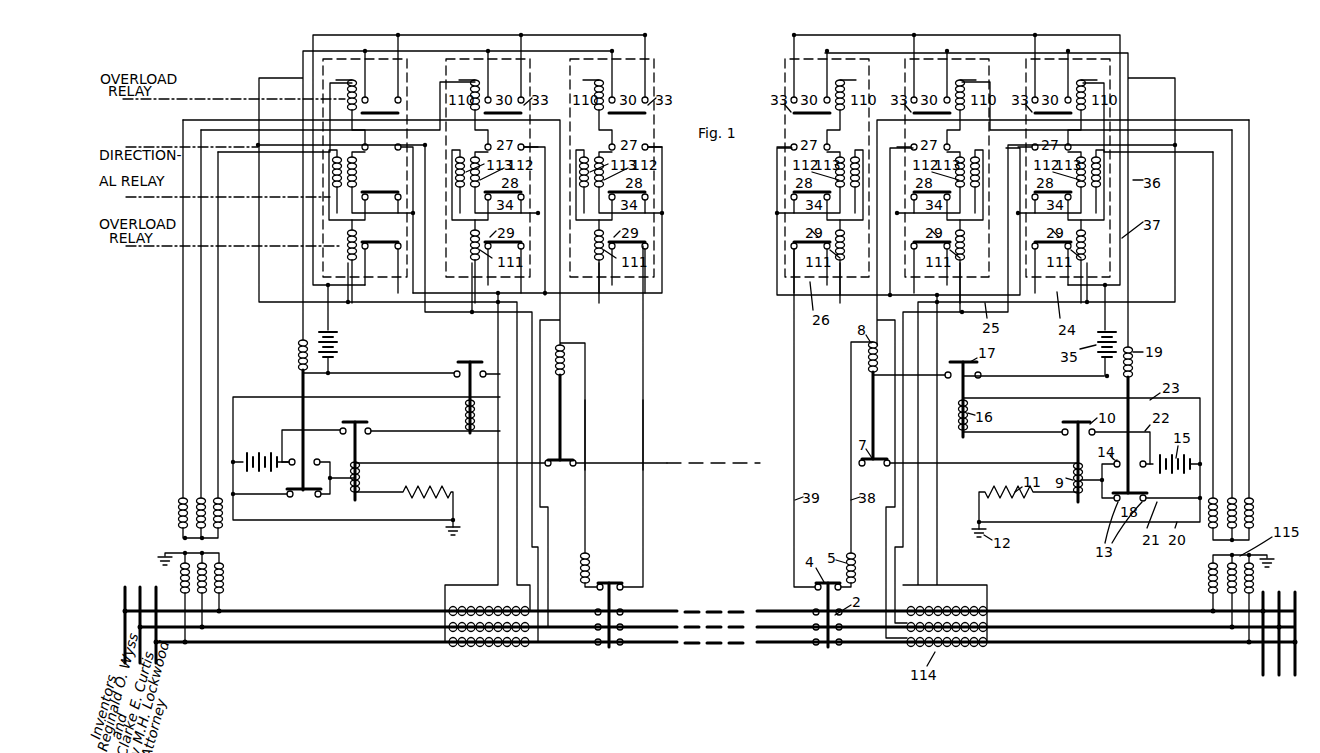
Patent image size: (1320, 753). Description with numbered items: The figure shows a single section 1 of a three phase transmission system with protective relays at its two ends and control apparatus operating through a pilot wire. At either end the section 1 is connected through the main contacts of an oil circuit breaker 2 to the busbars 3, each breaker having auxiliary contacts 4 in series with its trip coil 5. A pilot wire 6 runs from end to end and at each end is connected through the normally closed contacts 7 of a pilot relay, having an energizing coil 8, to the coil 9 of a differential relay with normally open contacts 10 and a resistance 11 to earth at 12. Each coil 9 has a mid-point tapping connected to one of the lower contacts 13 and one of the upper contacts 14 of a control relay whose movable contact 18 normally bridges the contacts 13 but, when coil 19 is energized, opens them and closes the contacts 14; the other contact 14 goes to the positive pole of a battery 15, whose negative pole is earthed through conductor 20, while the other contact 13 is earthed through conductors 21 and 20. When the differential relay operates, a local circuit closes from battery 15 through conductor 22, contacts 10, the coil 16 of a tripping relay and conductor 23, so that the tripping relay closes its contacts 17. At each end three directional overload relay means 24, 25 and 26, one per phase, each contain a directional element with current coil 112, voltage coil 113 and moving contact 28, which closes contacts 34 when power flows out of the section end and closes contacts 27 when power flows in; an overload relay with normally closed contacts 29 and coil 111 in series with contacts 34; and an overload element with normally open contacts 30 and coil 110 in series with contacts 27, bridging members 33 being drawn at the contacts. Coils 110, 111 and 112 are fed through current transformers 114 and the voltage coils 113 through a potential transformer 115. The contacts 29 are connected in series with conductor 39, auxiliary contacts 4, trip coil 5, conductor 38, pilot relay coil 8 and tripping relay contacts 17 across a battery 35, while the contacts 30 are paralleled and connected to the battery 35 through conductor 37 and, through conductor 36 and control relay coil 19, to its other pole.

The section of the phase conductors 1 is at (719, 643).
The oil circuit breaker 2 is at (623, 612).
The busbars 3 is at (127, 650).
The auxiliary contacts 4 is at (613, 582).
The trip coil 5 is at (591, 563).
The pilot wire 6 is at (716, 452).
The pilot relay contacts 7 is at (559, 466).
The pilot relay energizing coil 8 is at (559, 346).
The differential relay coil 9 is at (363, 474).
The differential relay contacts 10 is at (368, 424).
The resistance 11 is at (433, 490).
The earth 12 is at (458, 536).
The lower contacts 13 is at (318, 498).
The upper contacts 14 is at (318, 459).
The battery 15 is at (257, 455).
The tripping relay coil 16 is at (473, 428).
The tripping relay contacts 17 is at (466, 362).
The movable contact 18 is at (281, 443).
The control relay coil 19 is at (298, 358).
The conductor 20 is at (273, 520).
The conductor 21 is at (257, 497).
The conductor 22 is at (283, 430).
The conductor 23 is at (240, 398).
The directional overload relay means 24 is at (380, 292).
The directional overload relay means 25 is at (459, 303).
The directional overload relay means 26 is at (597, 292).
The directional element contacts 27 is at (387, 215).
The moving contact 28 is at (381, 187).
The overload relay contacts 29 is at (381, 259).
The overload element contacts 30 is at (381, 70).
The contact bridging member 33 is at (394, 102).
The directional element contacts 34 is at (394, 206).
The battery 35 is at (337, 344).
The conductor 36 is at (322, 262).
The conductor 37 is at (320, 217).
The conductor 38 is at (586, 500).
The conductor 39 is at (645, 500).
The overload element operating coil 110 is at (345, 112).
The overload relay operating coil 111 is at (374, 261).
The current coil 112 is at (379, 182).
The voltage coil 113 is at (359, 185).
The current transformers 114 is at (468, 652).
The potential transformer 115 is at (180, 553).